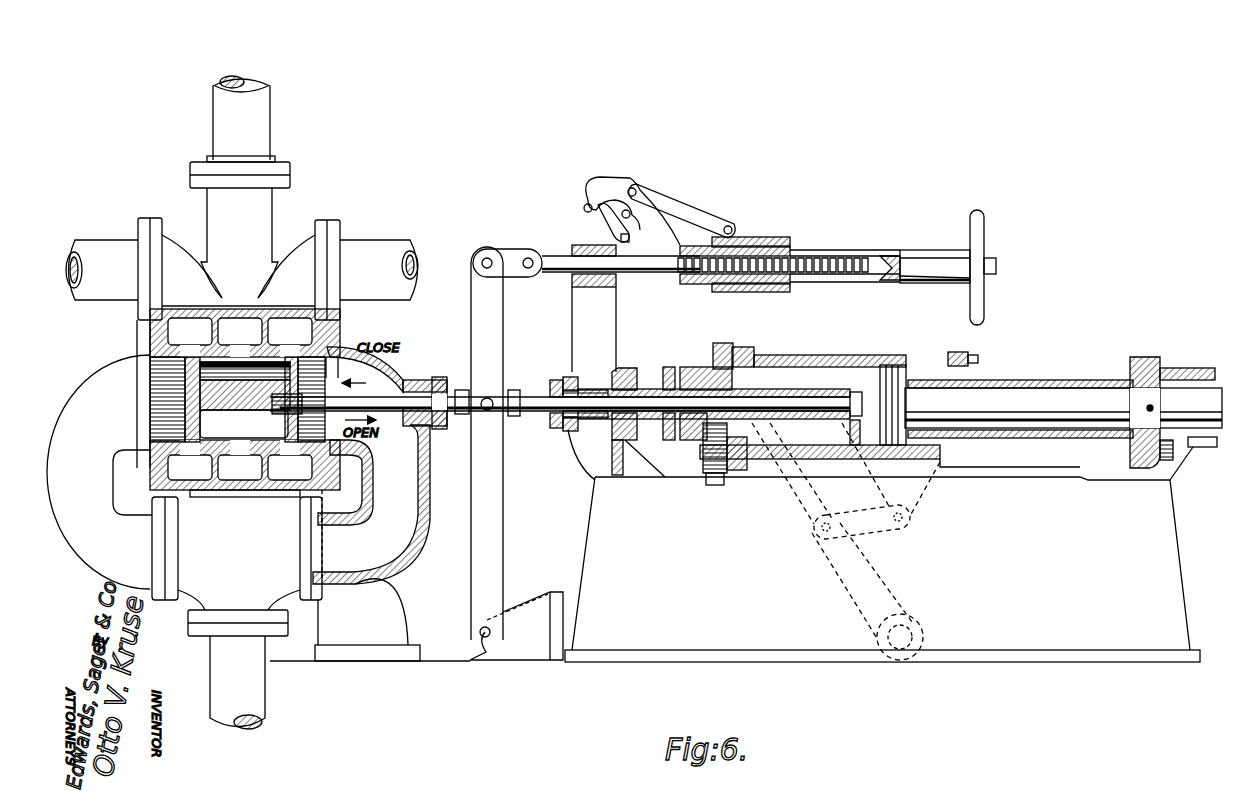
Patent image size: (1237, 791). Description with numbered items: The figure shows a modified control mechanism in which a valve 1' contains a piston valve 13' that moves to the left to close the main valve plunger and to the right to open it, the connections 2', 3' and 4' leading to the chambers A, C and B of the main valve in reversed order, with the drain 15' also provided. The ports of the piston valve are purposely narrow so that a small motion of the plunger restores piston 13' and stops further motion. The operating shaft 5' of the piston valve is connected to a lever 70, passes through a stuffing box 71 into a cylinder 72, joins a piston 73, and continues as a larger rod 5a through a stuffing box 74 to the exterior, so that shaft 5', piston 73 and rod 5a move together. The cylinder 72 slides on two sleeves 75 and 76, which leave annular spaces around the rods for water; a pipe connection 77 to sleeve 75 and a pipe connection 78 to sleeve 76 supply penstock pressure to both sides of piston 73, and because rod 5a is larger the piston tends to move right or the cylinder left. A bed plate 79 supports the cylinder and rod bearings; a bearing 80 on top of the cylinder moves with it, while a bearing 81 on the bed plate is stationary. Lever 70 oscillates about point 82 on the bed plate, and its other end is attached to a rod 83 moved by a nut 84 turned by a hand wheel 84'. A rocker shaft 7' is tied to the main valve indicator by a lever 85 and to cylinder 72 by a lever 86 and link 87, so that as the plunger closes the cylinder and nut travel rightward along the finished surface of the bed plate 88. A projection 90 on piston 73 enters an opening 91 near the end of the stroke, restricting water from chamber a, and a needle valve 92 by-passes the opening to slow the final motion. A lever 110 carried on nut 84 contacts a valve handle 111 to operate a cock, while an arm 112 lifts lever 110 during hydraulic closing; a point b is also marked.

The valve 1' is at (258, 439).
The connection 2' is at (130, 293).
The connection 3' is at (238, 211).
The connection 4' is at (349, 293).
The operating shaft 5' is at (566, 385).
The rod 5a is at (1060, 395).
The piston valve 13' is at (237, 399).
The drain 15' is at (250, 624).
The lever 70 is at (492, 326).
The stuffing box 71 is at (560, 428).
The cylinder 72 is at (850, 356).
The piston 73 is at (896, 372).
The stuffing box 74 is at (1186, 368).
The sleeve 75 is at (760, 388).
The sleeve 76 is at (1000, 380).
The pipe connection 77 is at (620, 380).
The pipe connection 78 is at (1152, 406).
The bed plate 79 is at (882, 569).
The bearing 80 is at (778, 246).
The bearing 81 is at (612, 286).
The pivot point 82 is at (479, 632).
The rod 83 is at (540, 262).
The nut 84 is at (824, 250).
The hand wheel 84' is at (1005, 263).
The lever 85 is at (800, 506).
The lever 86 is at (848, 577).
The link 87 is at (905, 540).
The finished surface of the bed plate 88 is at (1028, 478).
The projection 90 is at (850, 432).
The opening 91 is at (716, 368).
The needle valve 92 is at (708, 446).
The lever 110 is at (620, 184).
The valve handle 111 is at (614, 222).
The arm 112 is at (702, 222).
The rocker shaft 7' is at (916, 637).
The chamber a is at (829, 377).
The point b is at (905, 368).
The central chamber A is at (78, 277).
The annular chamber B is at (420, 273).
The chamber C is at (242, 72).